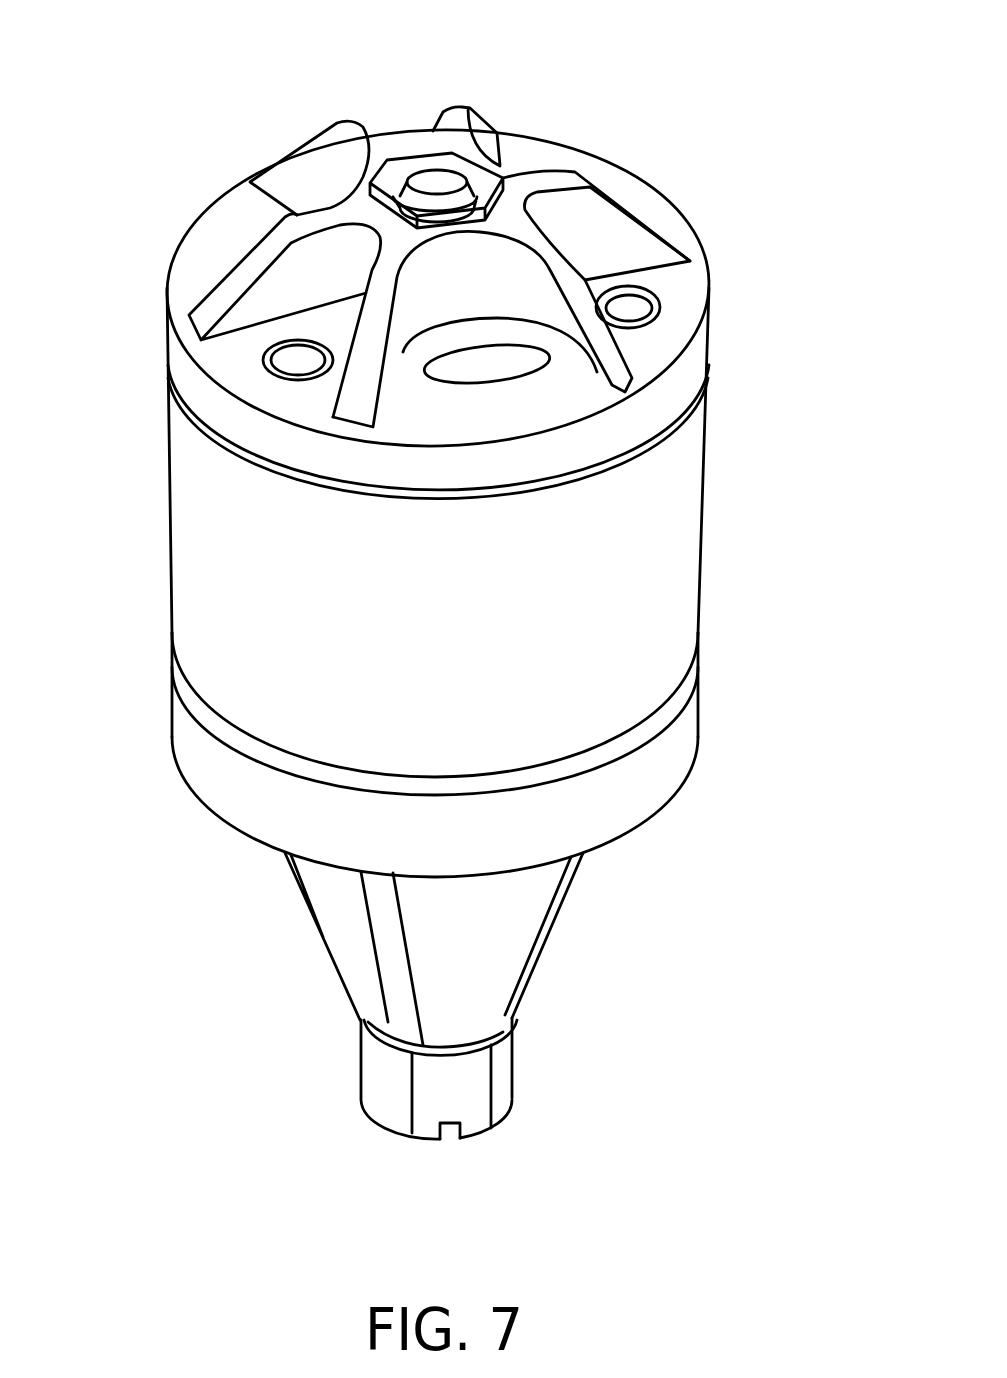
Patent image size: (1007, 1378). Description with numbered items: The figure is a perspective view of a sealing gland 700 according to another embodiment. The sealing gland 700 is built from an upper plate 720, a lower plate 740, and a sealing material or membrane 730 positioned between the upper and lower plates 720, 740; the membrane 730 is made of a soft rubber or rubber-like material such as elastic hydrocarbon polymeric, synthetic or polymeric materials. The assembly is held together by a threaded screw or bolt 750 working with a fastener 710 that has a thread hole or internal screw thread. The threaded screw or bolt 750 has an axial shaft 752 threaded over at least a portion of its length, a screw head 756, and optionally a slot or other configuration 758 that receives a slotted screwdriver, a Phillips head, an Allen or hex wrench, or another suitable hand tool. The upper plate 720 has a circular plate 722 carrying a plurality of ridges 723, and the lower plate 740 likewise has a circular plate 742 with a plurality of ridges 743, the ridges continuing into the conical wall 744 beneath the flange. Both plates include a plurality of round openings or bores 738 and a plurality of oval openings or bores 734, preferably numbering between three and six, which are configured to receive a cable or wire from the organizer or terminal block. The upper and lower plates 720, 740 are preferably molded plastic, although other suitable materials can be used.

The sealing gland 700 is at (185, 68).
The fastener 710 is at (505, 180).
The upper plate 720 is at (742, 204).
The circular plate 722 is at (700, 326).
The ridges 723 is at (633, 210).
The sealing material or membrane 730 is at (703, 517).
The oval openings or bores 734 is at (523, 376).
The round openings or bores 738 is at (293, 360).
The lower plate 740 is at (718, 835).
The circular plate 742 is at (698, 714).
The ridges 743 is at (383, 940).
The conical wall 744 is at (542, 946).
The threaded screw or bolt 750 is at (512, 1107).
The axial shaft 752 is at (436, 183).
The screw head 756 is at (365, 1112).
The slot or other configuration 758 is at (447, 1172).